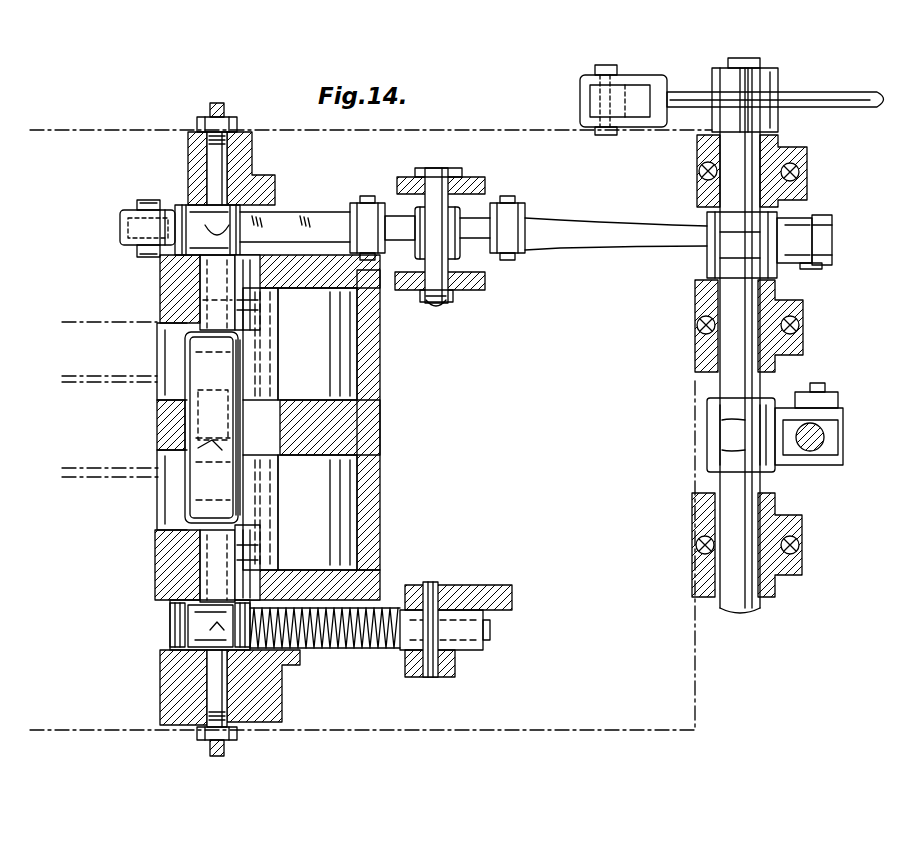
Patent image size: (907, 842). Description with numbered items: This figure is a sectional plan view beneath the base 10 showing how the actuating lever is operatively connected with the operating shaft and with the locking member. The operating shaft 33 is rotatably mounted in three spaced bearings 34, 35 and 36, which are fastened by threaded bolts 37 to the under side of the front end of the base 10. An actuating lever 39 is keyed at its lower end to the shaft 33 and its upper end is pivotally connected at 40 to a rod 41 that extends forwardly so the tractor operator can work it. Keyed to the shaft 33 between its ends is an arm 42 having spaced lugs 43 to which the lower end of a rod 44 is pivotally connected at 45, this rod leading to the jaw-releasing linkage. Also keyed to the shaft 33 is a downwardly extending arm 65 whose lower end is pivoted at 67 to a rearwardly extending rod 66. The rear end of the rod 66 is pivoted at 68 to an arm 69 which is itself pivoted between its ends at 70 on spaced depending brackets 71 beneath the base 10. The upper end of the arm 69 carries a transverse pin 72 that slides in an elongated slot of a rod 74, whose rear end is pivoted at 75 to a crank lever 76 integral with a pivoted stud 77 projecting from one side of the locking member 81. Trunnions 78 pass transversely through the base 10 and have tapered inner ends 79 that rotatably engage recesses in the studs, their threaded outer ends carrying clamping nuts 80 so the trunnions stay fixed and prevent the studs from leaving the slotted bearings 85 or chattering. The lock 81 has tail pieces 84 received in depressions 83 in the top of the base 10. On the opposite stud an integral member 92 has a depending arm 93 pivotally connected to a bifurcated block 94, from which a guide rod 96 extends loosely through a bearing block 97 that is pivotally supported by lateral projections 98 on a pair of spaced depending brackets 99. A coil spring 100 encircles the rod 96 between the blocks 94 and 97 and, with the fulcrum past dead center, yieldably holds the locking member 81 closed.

The base 10 is at (152, 130).
The operating shaft 33 is at (760, 60).
The bearing 34 is at (807, 162).
The bearing 35 is at (805, 318).
The bearing 36 is at (795, 570).
The threaded bolts 37 is at (700, 172).
The actuating lever 39 is at (690, 92).
The pivotal connection 40 is at (612, 68).
The rod 41 is at (870, 96).
The arm 42 is at (712, 433).
The spaced lugs 43 is at (787, 465).
The rod 44 is at (820, 425).
The pivotal connection 45 is at (822, 465).
The arm or lever 65 is at (828, 218).
The rearwardly extending rod 66 is at (627, 248).
The pivotal connection 67 is at (822, 266).
The pivotal connection 68 is at (500, 262).
The arm 69 is at (470, 255).
The pivot 70 is at (450, 160).
The depending brackets 71 is at (408, 160).
The transverse pin 72 is at (372, 203).
The rod 74 is at (325, 225).
The pivotal connection 75 is at (145, 200).
The crank lever 76 is at (160, 257).
The pivoted stud 77 is at (205, 275).
The trunnions 78 is at (215, 162).
The tapered inner ends 79 is at (245, 200).
The clamping nuts 80 is at (230, 117).
The locking member 81 is at (200, 425).
The depressions 83 is at (335, 358).
The tail pieces 84 is at (265, 350).
The slotted bearings 85 is at (245, 275).
The integral member 92 is at (190, 635).
The depending arm 93 is at (180, 628).
The bifurcated block 94 is at (172, 612).
The guide rod 96 is at (490, 630).
The bearing block 97 is at (468, 650).
The lateral projections 98 is at (428, 585).
The depending brackets 99 is at (445, 585).
The coil spring 100 is at (325, 655).